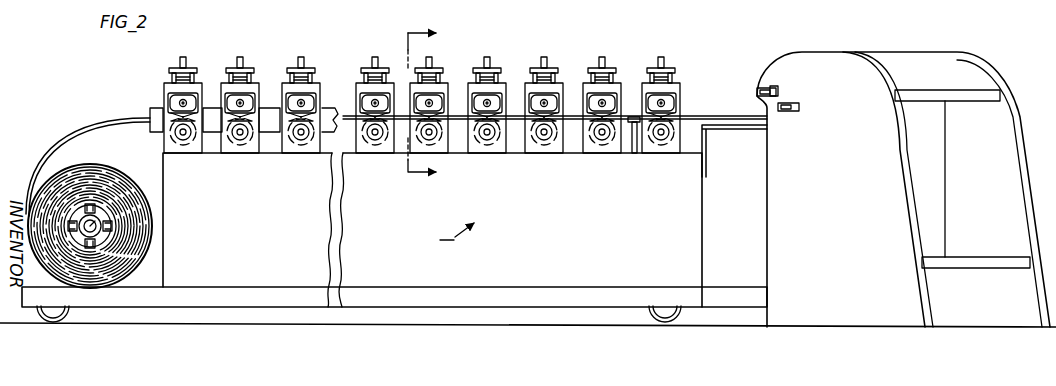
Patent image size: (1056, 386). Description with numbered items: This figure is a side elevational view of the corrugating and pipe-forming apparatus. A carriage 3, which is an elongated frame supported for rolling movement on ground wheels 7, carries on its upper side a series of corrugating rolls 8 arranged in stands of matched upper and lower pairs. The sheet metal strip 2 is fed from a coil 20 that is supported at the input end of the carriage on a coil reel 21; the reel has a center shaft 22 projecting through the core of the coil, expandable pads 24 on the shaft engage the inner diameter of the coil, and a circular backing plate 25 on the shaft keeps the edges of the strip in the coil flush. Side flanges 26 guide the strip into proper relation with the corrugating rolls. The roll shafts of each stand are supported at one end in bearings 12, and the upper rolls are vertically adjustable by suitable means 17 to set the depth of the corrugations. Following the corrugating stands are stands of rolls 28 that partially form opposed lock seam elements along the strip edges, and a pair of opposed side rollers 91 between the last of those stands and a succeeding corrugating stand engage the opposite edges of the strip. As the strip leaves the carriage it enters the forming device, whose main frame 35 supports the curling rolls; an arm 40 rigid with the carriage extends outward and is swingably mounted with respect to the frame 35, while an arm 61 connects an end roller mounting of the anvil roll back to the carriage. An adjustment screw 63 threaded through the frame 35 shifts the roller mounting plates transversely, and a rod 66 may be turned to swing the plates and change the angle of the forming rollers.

The sheet metal strip 2 is at (131, 124).
The carriage 3 is at (441, 132).
The ground wheels 7 is at (58, 313).
The corrugating rolls 8 is at (283, 81).
The bearings 12 is at (287, 148).
The vertical adjusting means 17 is at (173, 63).
The coil 20 is at (100, 180).
The coil reel 21 is at (106, 210).
The center shaft 22 is at (100, 222).
The expandable pads 24 is at (100, 246).
The circular backing plate 25 is at (135, 182).
The side flanges 26 is at (211, 113).
The lock seam forming rolls 28 is at (590, 62).
The main frame 35 is at (847, 175).
The arm 40 is at (730, 303).
The arm 61 is at (737, 129).
The adjustment screw 63 is at (770, 90).
The rod 66 is at (757, 91).
The side rollers 91 is at (635, 112).